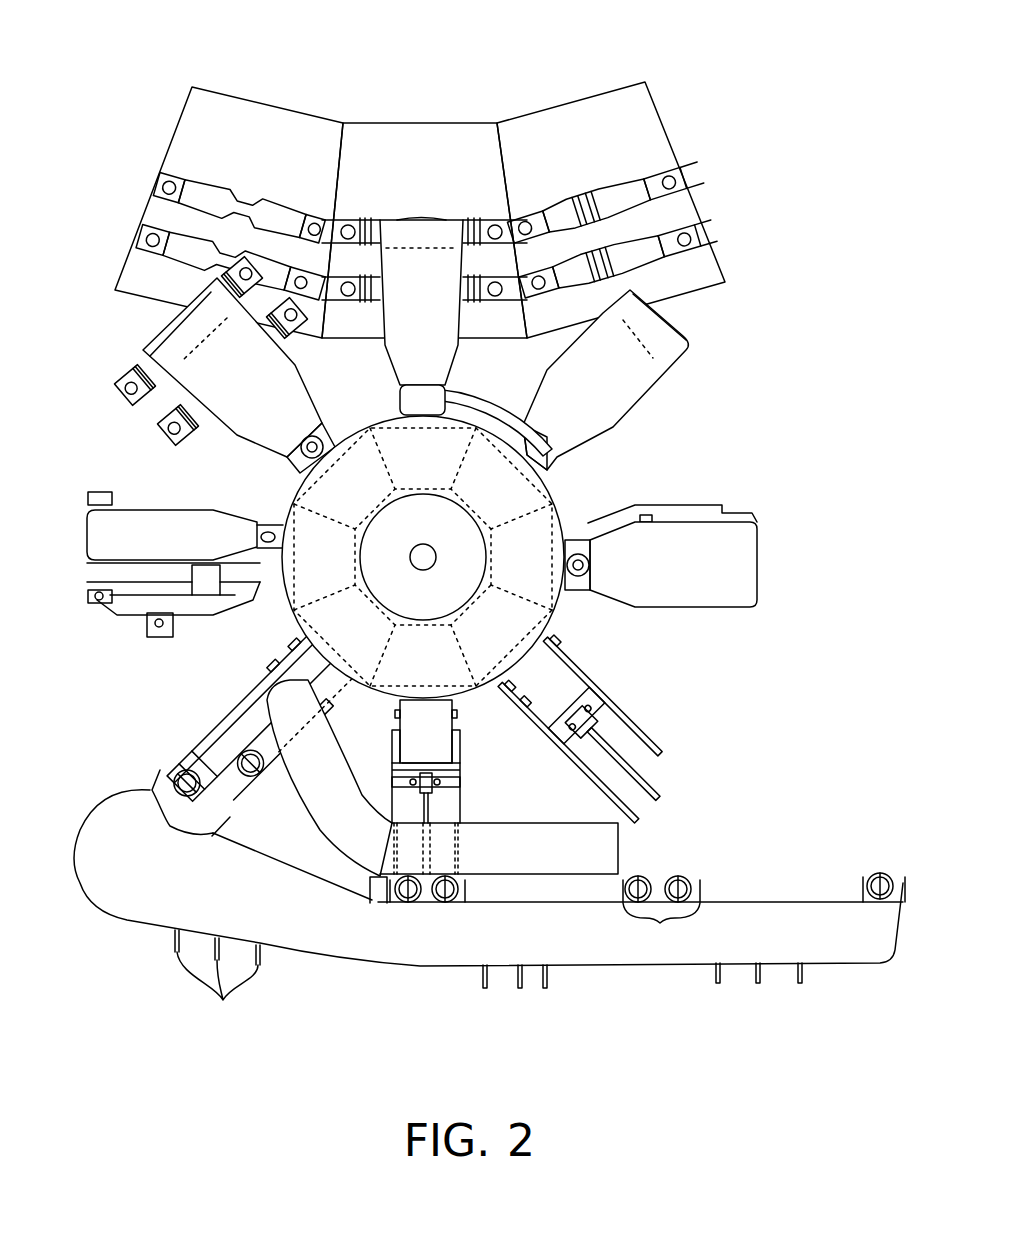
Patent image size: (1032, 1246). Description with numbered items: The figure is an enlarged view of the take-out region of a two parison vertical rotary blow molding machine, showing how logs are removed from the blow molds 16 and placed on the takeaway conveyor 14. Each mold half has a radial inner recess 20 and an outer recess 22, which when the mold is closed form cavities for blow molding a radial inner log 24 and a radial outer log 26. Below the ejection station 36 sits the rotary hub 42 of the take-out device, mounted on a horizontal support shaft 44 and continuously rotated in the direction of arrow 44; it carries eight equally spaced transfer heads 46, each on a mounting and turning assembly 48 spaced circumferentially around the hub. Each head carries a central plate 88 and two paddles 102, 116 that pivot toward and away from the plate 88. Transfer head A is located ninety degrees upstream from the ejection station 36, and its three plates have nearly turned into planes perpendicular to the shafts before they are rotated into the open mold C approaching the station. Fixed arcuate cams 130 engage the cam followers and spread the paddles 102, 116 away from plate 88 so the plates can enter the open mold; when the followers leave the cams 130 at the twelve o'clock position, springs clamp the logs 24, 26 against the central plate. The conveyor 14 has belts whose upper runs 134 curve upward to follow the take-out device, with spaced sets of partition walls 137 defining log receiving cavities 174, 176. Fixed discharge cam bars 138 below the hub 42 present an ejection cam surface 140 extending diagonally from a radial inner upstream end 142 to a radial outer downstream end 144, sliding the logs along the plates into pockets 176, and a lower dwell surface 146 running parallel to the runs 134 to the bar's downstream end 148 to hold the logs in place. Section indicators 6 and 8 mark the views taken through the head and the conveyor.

The takeaway conveyor 14 is at (128, 932).
The blow mold 16 is at (358, 122).
The radial inner recess 20 is at (197, 183).
The outer recess 22 is at (152, 295).
The radial inner log 24 is at (545, 200).
The radial outer log 26 is at (670, 268).
The ejection station 36 is at (430, 106).
The rotary hub 42 is at (562, 491).
The horizontal support shaft 44 is at (429, 546).
The transfer head 46 is at (606, 602).
The mounting and turning assembly 48 is at (422, 474).
The plate 88 is at (662, 799).
The paddle 102 is at (626, 713).
The paddle 116 is at (637, 821).
The arcuate cam 130 is at (497, 402).
The upper run 134 is at (248, 858).
The lateral partition wall 137 is at (419, 896).
The discharge cam bar 138 is at (347, 749).
The ejection cam surface 140 is at (300, 788).
The radial inner upstream end 142 is at (252, 690).
The radial outer downstream end 144 is at (372, 900).
The lower dwell surface 146 is at (498, 879).
The downstream end of cam bar 148 is at (620, 850).
The log receiving cavity 174 is at (452, 905).
The log receiving cavity 176 is at (410, 905).
The section line 6 is at (356, 496).
The section line 8 is at (445, 673).
The transfer head A is at (800, 556).
The open mold C is at (550, 69).